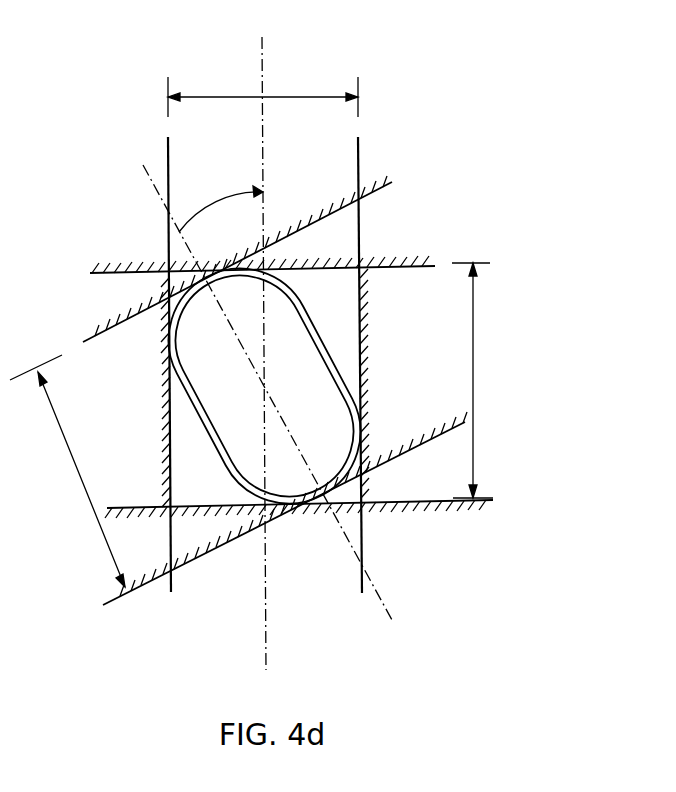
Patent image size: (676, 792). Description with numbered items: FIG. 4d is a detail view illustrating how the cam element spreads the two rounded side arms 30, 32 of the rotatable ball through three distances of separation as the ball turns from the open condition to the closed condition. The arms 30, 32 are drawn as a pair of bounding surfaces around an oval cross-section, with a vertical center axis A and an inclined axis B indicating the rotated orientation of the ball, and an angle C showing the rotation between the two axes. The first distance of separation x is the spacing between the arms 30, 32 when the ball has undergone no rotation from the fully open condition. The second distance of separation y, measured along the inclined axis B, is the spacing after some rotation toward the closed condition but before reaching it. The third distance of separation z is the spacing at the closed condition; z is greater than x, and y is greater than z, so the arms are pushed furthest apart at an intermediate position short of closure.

The side arm 30 is at (424, 262).
The side arm 32 is at (360, 303).
The vertical axis A- A is at (264, 355).
The inclined axis B- B is at (265, 399).
The tilt angle C is at (206, 161).
The first distance of separation x is at (263, 90).
The second distance of separation y is at (67, 471).
The third distance of separation z is at (484, 380).